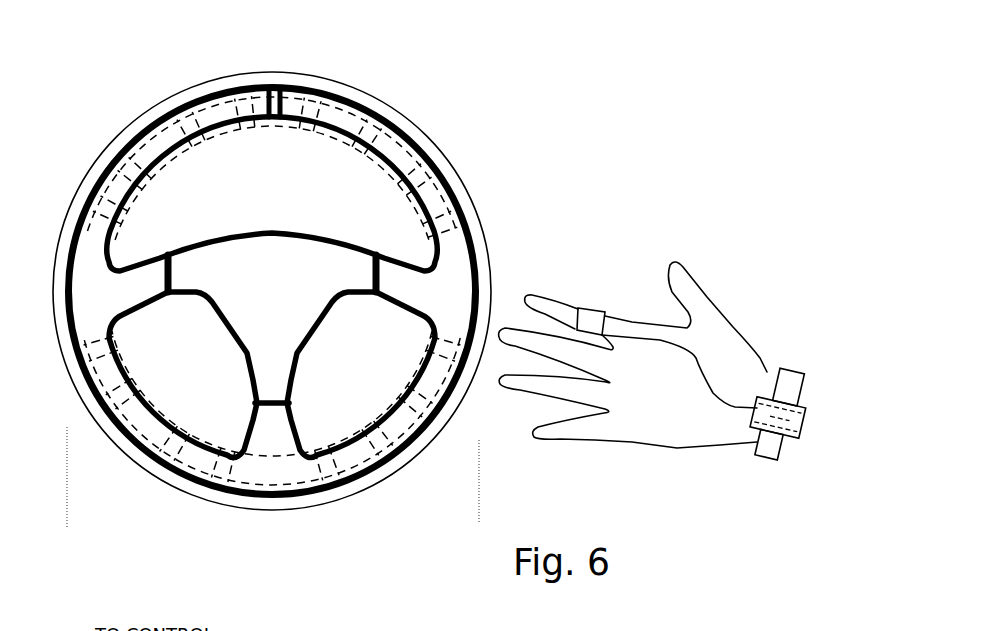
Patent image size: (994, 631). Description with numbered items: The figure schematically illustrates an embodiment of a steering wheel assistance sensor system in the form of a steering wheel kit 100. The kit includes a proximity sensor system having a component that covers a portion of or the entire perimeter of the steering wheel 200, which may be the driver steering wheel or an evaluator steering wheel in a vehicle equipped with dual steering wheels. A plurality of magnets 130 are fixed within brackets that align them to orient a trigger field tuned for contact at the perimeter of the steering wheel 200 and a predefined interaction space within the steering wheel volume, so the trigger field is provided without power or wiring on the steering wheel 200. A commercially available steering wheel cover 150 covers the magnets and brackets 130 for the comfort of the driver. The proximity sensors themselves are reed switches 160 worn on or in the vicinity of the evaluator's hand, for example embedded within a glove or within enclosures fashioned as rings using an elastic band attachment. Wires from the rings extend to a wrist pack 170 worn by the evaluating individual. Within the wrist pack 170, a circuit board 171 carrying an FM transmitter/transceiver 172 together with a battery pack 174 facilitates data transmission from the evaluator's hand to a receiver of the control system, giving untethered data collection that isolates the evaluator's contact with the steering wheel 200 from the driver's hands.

The steering wheel kit 100 is at (662, 166).
The magnets 130 is at (412, 130).
The steering wheel cover 150 is at (187, 86).
The reed switches 160 is at (593, 315).
The wrist pack 170 is at (815, 415).
The circuit board 171 is at (813, 451).
The FM transmitter/transceiver 172 is at (765, 380).
The battery pack 174 is at (794, 425).
The steering wheel 200 is at (210, 273).